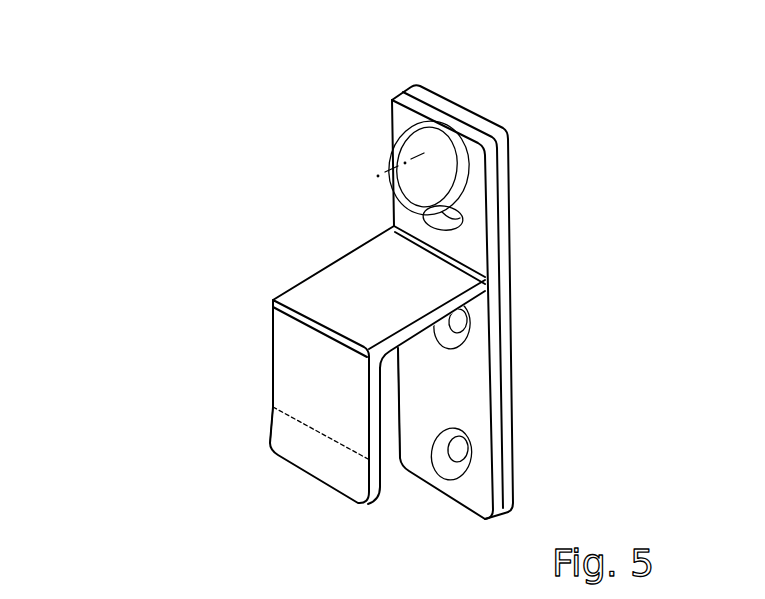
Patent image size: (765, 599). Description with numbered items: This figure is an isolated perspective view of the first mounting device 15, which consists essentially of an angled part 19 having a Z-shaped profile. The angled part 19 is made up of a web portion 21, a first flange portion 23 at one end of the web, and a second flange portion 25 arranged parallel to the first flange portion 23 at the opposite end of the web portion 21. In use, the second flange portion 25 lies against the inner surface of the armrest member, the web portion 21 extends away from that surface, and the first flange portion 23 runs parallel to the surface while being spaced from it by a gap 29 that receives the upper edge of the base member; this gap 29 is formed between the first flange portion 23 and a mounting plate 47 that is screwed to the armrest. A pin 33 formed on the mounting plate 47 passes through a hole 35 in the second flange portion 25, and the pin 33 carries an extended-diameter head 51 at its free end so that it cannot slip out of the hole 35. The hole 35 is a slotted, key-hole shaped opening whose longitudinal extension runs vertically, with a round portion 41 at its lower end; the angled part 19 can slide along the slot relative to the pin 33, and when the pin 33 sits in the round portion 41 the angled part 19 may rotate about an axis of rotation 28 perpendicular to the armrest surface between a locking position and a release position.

The first mounting device 15 is at (158, 265).
The angled part 19 is at (345, 311).
The web portion 21 is at (387, 283).
The first flange portion 23 is at (323, 392).
The second flange portion 25 is at (480, 194).
The axis of rotation 28 is at (410, 160).
The gap 29 is at (388, 398).
The pin 33 is at (433, 181).
The extended-diameter head 51 is at (433, 181).
The hole 35 is at (458, 217).
The round portion 41 is at (458, 217).
The mounting plate 47 is at (458, 412).